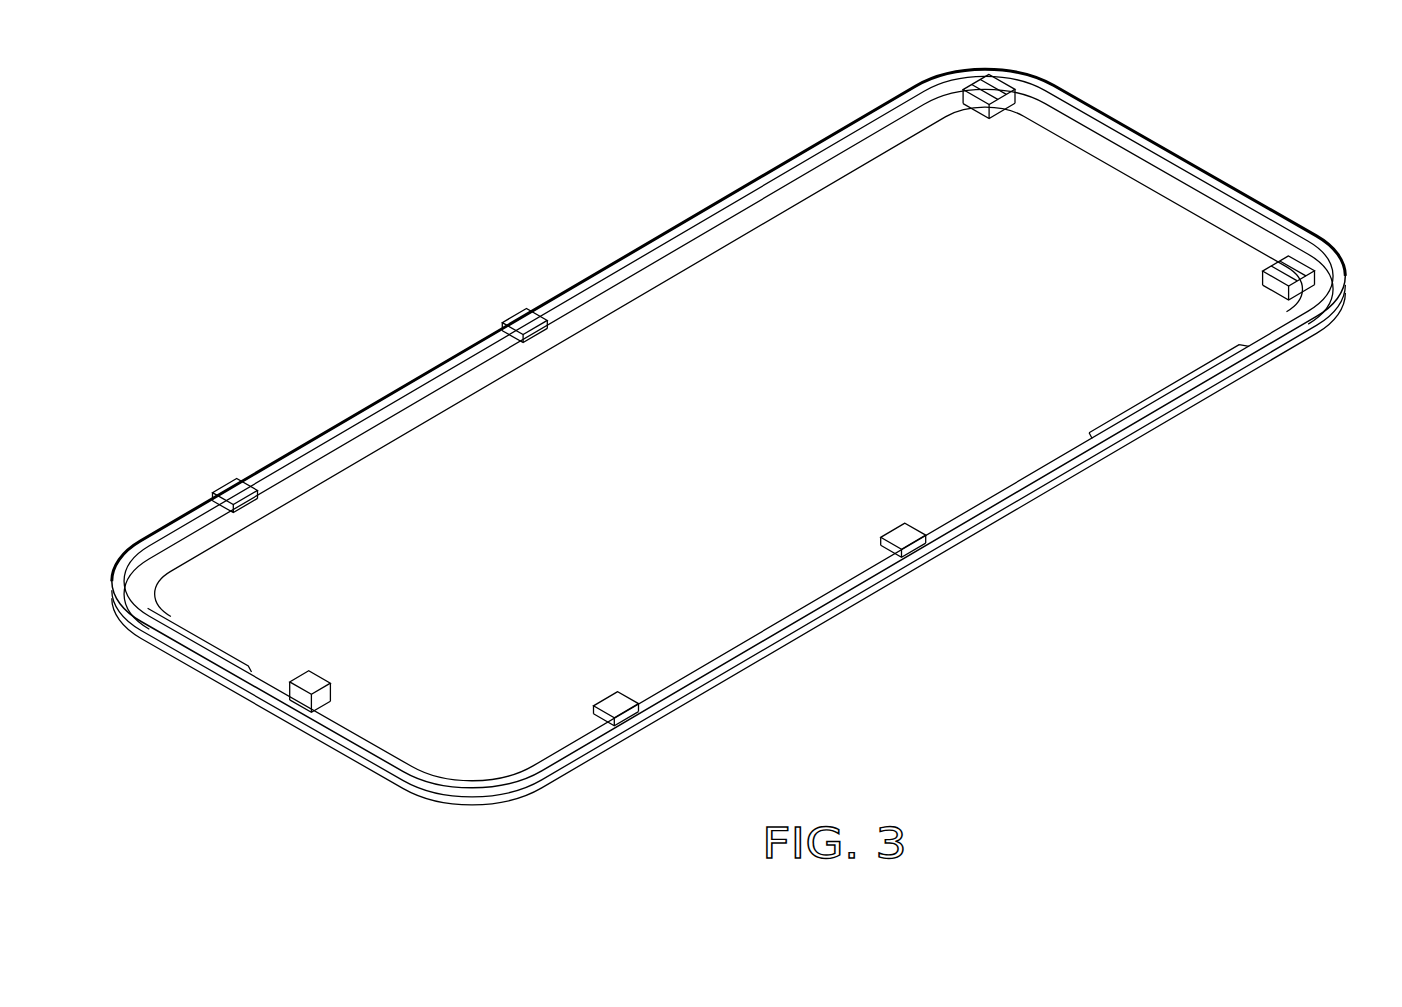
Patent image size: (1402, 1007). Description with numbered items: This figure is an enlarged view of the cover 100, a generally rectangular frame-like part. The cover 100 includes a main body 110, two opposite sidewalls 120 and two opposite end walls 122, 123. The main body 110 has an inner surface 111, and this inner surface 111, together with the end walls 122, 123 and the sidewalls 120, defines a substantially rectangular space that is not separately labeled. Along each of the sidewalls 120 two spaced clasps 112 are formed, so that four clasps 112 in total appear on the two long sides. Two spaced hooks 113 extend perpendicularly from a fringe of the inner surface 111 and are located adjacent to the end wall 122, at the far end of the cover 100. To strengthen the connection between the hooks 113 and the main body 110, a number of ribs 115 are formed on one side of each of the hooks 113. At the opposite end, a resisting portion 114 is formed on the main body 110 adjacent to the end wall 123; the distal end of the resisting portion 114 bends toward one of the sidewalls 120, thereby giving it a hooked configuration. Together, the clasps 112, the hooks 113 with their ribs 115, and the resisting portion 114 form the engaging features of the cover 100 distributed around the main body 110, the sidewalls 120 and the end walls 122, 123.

The cover 100 is at (728, 437).
The main body 110 is at (728, 437).
The inner surface 111 is at (230, 592).
The clasps 112 is at (540, 323).
The hooks 113 is at (1005, 98).
The resisting portion 114 is at (300, 707).
The ribs 115 is at (968, 110).
The sidewalls 120 is at (728, 437).
The end wall 122 is at (1158, 158).
The end wall 123 is at (355, 760).